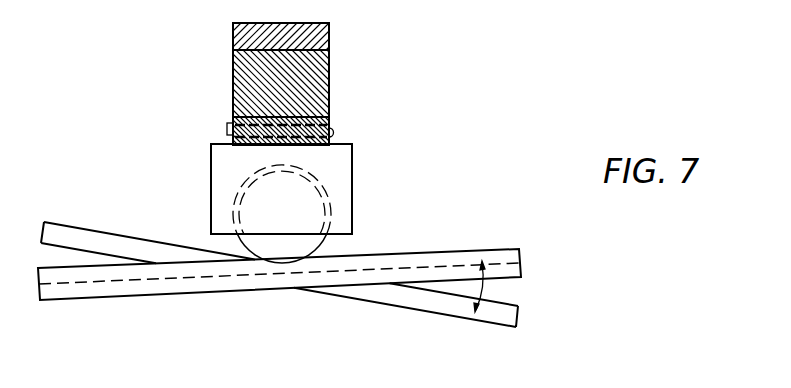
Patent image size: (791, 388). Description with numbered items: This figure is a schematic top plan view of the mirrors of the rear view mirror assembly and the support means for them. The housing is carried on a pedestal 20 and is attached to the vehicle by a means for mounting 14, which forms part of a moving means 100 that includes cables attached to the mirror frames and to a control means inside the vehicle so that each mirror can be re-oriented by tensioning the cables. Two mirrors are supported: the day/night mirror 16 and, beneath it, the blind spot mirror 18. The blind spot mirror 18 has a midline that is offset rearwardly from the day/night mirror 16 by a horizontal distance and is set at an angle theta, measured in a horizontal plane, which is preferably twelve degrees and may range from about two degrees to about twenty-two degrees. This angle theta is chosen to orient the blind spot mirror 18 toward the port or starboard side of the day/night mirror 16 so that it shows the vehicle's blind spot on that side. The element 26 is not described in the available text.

The moving means 100 is at (350, 42).
The pedestal 20 is at (333, 129).
The coil lead/terminal 26 is at (227, 127).
The means for mounting 14 is at (377, 187).
The day/night mirror 16 is at (521, 283).
The blind spot mirror 18 is at (518, 320).
The angle theta is at (488, 286).